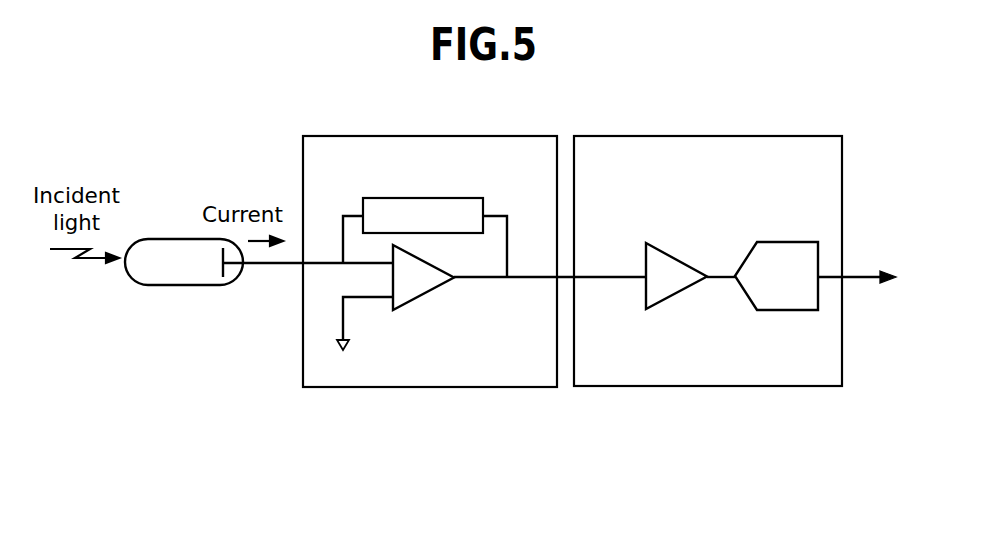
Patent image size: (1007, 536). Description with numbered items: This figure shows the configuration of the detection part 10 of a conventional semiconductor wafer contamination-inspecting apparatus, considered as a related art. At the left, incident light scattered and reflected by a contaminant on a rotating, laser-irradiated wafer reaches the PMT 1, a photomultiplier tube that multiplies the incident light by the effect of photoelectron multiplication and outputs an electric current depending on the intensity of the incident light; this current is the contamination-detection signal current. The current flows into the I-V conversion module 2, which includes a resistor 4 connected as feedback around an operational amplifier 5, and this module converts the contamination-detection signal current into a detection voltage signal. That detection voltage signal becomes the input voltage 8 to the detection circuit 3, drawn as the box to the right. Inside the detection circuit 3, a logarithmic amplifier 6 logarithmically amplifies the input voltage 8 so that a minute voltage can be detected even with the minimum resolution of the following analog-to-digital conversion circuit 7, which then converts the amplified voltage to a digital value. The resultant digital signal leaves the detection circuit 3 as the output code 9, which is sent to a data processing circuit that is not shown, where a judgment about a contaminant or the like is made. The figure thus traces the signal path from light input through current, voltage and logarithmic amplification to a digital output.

The PMT (Photo Multiplier Tube) 1 is at (155, 285).
The I-V conversion module 2 is at (303, 338).
The detection circuit 3 is at (613, 386).
The resistor 4 is at (387, 198).
The operational amplifier 5 is at (422, 297).
The logarithmic amplifier 6 is at (658, 243).
The analog-to-digital conversion circuit 7 is at (770, 242).
The input voltage 8 is at (595, 276).
The output code 9 is at (863, 278).
The detection part 10 is at (200, 425).